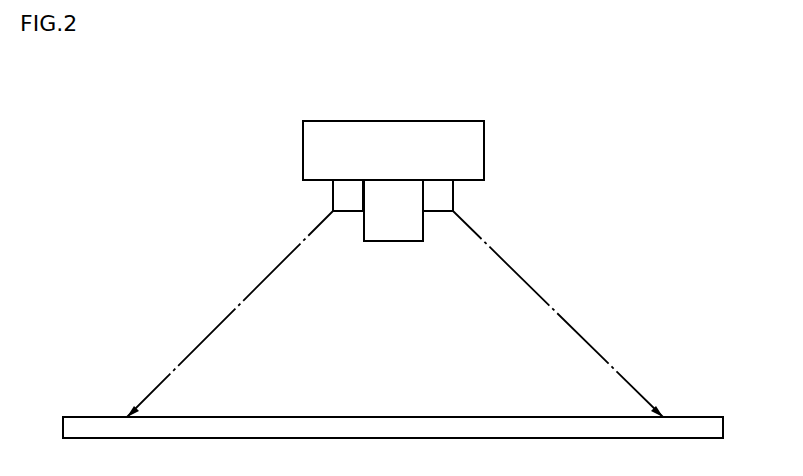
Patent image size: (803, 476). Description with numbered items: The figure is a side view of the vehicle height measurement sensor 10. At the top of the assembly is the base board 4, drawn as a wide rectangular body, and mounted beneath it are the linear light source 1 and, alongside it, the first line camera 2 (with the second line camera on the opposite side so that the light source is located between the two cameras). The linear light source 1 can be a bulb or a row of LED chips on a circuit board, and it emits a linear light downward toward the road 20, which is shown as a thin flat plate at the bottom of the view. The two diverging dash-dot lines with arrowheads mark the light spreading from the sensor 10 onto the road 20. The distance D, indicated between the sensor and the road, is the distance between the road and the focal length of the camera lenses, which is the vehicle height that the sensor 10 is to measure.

The linear light source 1 is at (447, 196).
The first line camera 2 is at (383, 230).
The base board 4 is at (322, 130).
The vehicle height measurement sensor 10 is at (503, 128).
The road 20 is at (700, 420).
The vehicle height (distance) D is at (547, 342).